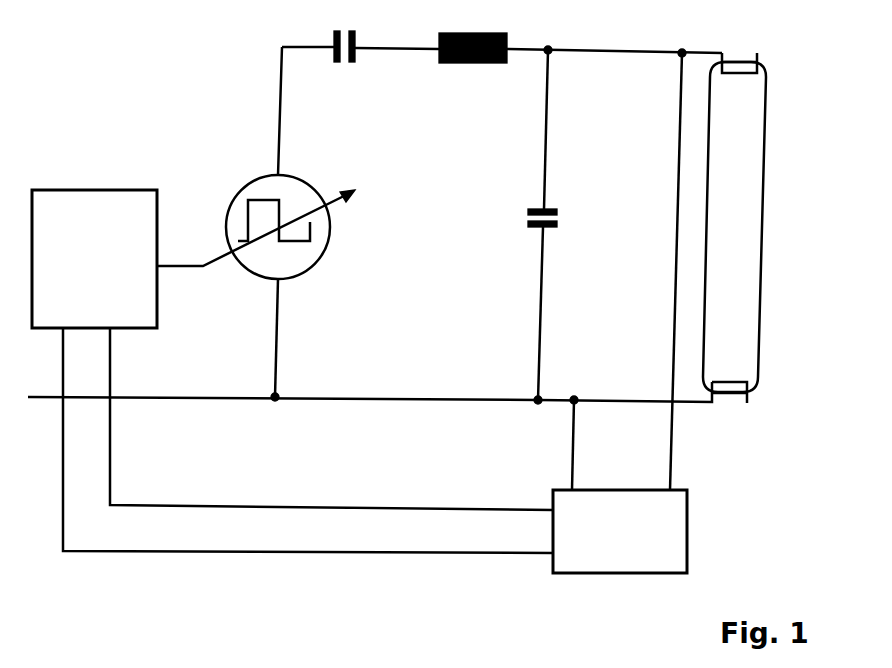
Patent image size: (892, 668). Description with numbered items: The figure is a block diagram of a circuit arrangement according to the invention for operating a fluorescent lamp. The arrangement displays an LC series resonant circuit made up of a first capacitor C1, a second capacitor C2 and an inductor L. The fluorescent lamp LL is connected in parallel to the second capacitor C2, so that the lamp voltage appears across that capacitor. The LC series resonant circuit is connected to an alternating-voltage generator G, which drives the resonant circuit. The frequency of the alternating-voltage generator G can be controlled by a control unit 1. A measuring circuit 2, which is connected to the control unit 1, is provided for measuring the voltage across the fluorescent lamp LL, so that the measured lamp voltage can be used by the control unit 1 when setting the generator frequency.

The control unit 1 is at (118, 207).
The measuring circuit 2 is at (627, 544).
The alternating-voltage generator G is at (289, 227).
The first capacitor C1 is at (346, 33).
The second capacitor C2 is at (557, 225).
The inductor L is at (473, 36).
The fluorescent lamp LL is at (752, 228).